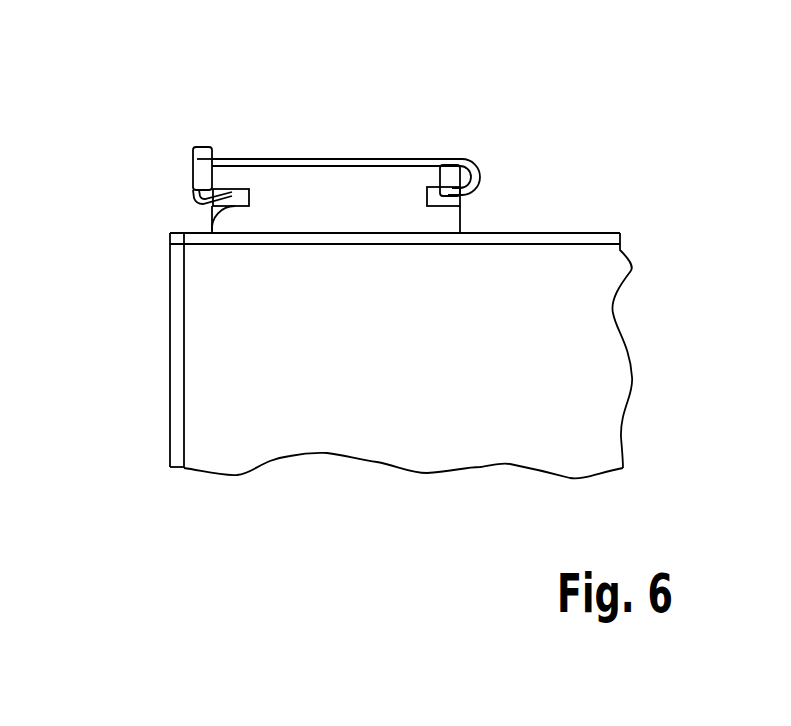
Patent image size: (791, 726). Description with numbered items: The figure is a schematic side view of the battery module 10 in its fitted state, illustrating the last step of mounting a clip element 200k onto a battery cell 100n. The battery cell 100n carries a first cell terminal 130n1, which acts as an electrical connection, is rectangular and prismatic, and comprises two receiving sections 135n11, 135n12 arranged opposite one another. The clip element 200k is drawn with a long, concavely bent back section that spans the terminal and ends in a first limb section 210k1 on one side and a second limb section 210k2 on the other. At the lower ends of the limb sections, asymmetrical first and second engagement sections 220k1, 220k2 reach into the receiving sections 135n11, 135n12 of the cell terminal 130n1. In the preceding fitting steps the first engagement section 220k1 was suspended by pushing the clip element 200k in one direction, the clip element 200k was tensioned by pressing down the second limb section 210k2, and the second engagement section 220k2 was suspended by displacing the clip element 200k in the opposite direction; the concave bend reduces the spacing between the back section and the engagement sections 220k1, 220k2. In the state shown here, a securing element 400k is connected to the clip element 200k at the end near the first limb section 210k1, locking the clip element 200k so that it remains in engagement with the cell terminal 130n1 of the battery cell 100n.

The battery module 10 is at (361, 26).
The battery cell 100n is at (245, 452).
The clip element 200k is at (341, 81).
The securing element 400k is at (212, 156).
The first limb section 210k1 is at (193, 180).
The second limb section 210k2 is at (470, 163).
The first engagement section 220k1 is at (193, 203).
The second engagement section 220k2 is at (463, 197).
The receiving section 135n11 is at (212, 230).
The receiving section 135n12 is at (440, 197).
The first cell terminal 130n1 is at (383, 207).